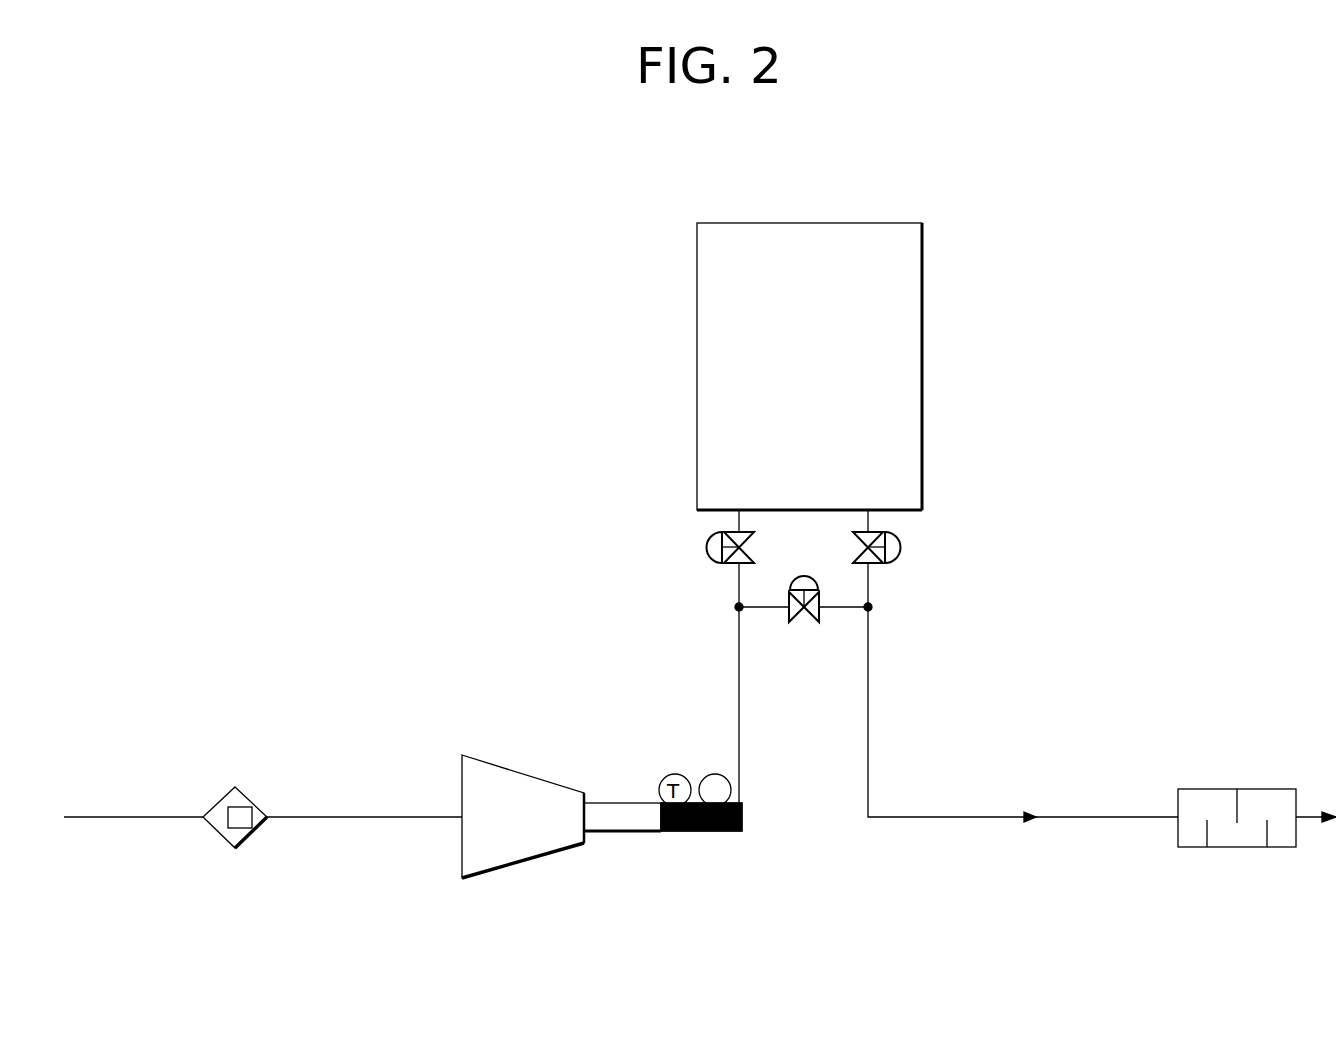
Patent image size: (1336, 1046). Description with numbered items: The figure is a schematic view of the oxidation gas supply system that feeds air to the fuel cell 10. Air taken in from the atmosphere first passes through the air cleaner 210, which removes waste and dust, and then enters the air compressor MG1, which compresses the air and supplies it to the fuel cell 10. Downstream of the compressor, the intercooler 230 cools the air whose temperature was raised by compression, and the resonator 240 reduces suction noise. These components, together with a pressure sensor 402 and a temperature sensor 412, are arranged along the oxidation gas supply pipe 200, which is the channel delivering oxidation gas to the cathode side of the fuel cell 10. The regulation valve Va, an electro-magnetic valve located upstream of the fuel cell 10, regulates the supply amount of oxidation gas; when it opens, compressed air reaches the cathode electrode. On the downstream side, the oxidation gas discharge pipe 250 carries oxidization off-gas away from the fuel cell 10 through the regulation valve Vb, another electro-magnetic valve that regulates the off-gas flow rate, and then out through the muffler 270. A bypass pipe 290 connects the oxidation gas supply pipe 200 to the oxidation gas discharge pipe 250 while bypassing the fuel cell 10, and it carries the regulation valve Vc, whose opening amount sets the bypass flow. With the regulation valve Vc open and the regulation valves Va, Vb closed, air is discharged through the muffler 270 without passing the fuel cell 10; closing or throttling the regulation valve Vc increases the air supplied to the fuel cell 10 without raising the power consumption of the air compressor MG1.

The fuel cell 10 is at (835, 223).
The oxidation gas supply pipe 200 is at (741, 672).
The air cleaner 210 is at (218, 826).
The intercooler 230 is at (628, 820).
The resonator 240 is at (742, 830).
The oxidation gas discharge pipe 250 is at (870, 650).
The muffler 270 is at (1218, 789).
The bypass pipe 290 is at (766, 607).
The pressure sensor 402 is at (733, 792).
The temperature sensor 412 is at (722, 832).
The air compressor MG1 is at (518, 838).
The regulation valve Va is at (724, 568).
The regulation valve Vb is at (884, 568).
The regulation valve (bypass valve) Vc is at (803, 618).